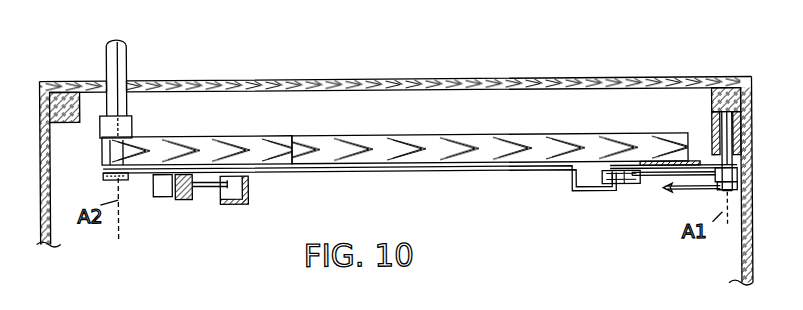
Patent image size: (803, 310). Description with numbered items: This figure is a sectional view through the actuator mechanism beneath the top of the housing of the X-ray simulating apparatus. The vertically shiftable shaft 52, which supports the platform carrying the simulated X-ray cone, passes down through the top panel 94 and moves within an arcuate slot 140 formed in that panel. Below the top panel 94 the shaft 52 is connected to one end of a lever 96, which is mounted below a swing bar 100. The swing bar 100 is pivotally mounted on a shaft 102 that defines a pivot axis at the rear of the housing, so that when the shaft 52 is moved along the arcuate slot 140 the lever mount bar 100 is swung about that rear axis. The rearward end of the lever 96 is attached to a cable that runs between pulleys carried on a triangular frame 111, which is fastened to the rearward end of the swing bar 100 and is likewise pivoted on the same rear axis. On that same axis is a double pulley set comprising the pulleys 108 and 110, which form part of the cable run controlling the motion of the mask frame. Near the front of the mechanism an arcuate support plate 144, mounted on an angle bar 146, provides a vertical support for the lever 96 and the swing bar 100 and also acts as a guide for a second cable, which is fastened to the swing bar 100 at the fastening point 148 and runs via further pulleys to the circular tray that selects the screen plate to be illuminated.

The vertically shiftable shaft 52 is at (126, 53).
The top panel 94 is at (442, 80).
The lever 96 is at (434, 173).
The swing bar 100 is at (328, 136).
The shaft 102 is at (738, 119).
The pulley 108 is at (743, 167).
The pulley 110 is at (740, 186).
The triangular frame 111 is at (612, 169).
The arcuate slot 140 is at (136, 80).
The arcuate support plate 144 is at (183, 193).
The angle bar 146 is at (248, 194).
The fastening point 148 is at (170, 185).